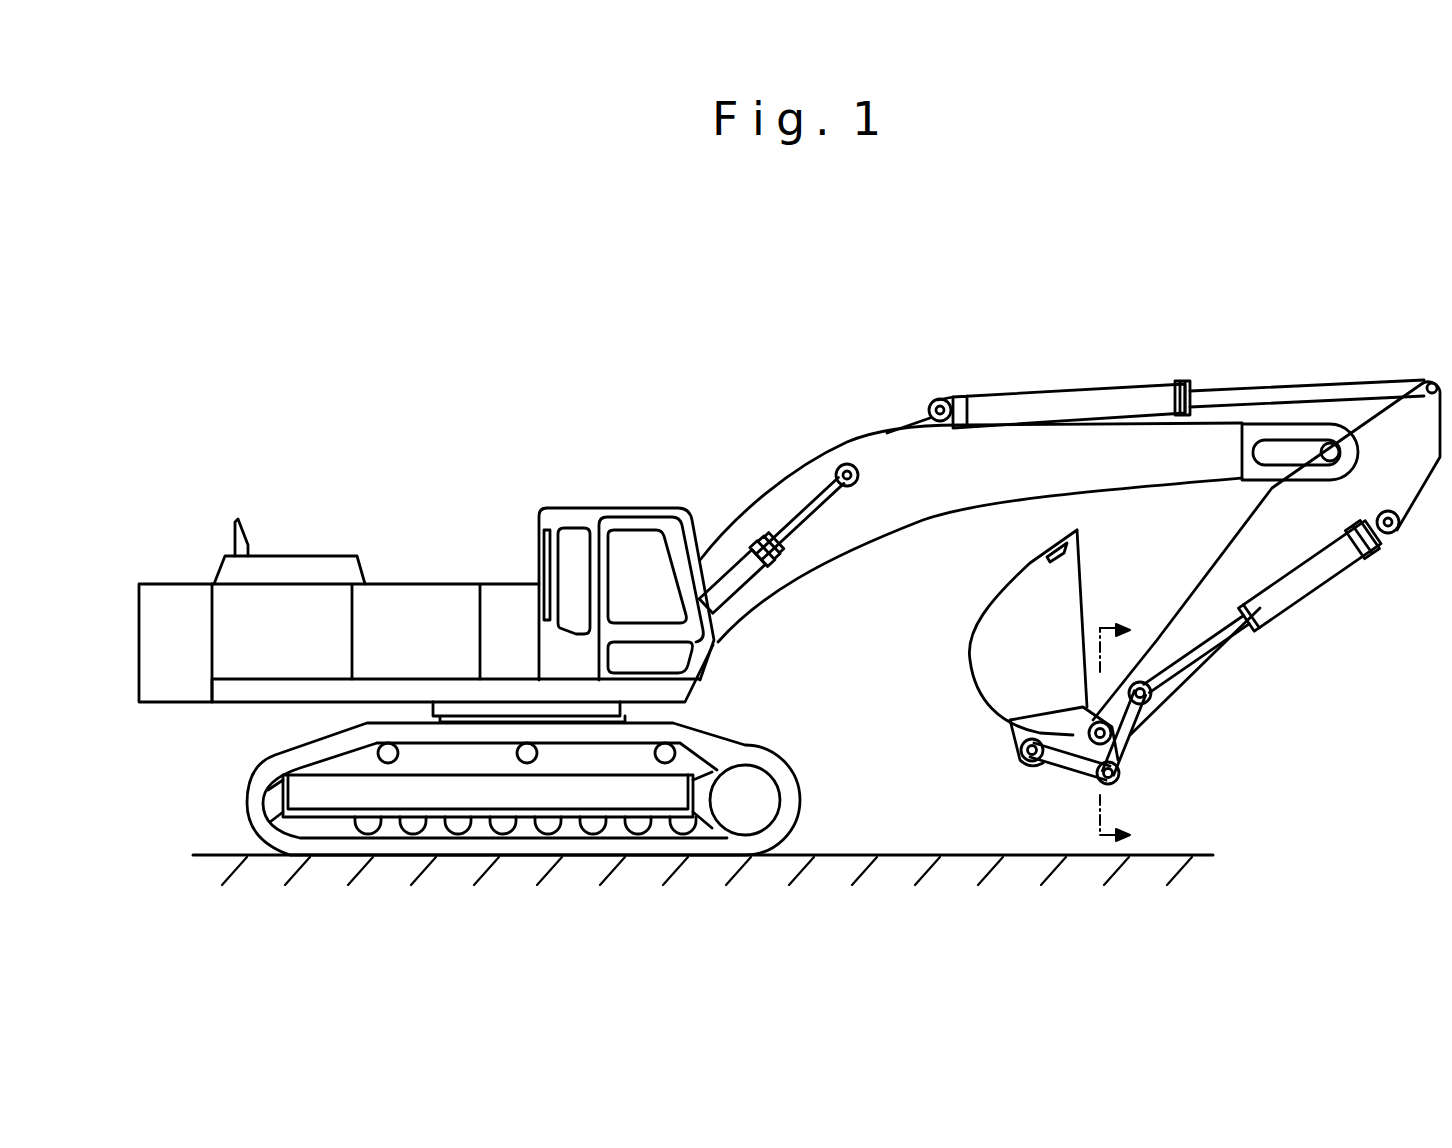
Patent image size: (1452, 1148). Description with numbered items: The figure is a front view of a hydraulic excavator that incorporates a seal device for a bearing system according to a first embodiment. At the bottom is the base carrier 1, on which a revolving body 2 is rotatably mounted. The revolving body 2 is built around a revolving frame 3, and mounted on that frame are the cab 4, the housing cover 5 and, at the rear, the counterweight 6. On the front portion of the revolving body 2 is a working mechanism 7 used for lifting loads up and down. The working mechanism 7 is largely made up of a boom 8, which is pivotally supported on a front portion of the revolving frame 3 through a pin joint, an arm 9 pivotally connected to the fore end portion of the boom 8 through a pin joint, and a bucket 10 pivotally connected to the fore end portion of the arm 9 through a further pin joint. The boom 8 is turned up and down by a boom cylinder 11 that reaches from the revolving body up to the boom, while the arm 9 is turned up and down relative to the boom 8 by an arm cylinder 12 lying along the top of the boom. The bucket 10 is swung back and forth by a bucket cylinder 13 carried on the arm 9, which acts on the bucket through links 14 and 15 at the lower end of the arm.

The base carrier 1 is at (775, 753).
The revolving body 2 is at (426, 602).
The revolving frame 3 is at (242, 692).
The cab 4 is at (632, 530).
The housing cover 5 is at (297, 602).
The counterweight 6 is at (176, 590).
The working mechanism 7 is at (1069, 574).
The boom 8 is at (930, 495).
The arm 9 is at (1225, 578).
The bucket 10 is at (990, 667).
The boom cylinder 11 is at (738, 578).
The arm cylinder 12 is at (1087, 402).
The bucket cylinder 13 is at (1325, 583).
The link 14 is at (1137, 740).
The link 15 is at (1067, 762).